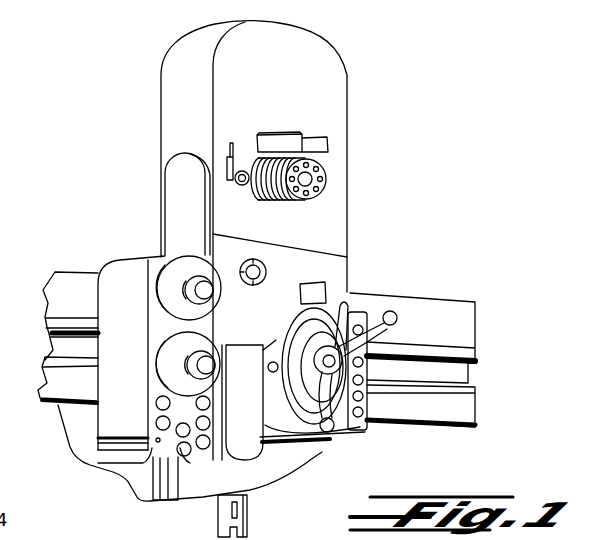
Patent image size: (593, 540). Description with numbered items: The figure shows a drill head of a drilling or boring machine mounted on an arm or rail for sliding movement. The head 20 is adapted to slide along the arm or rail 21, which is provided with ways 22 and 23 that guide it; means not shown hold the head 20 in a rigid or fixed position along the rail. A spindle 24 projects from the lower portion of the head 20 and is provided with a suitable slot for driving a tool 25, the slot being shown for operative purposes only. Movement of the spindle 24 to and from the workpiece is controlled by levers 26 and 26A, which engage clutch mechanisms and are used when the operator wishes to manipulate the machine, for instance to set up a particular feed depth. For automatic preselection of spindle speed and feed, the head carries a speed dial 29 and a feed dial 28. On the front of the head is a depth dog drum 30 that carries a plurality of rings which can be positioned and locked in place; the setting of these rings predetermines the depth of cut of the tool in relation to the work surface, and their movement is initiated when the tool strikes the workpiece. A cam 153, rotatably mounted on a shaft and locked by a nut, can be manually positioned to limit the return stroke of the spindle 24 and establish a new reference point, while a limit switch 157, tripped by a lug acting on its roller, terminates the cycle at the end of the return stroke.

The head 20 is at (327, 78).
The arm or rail 21 is at (454, 332).
The way 22 is at (460, 329).
The way 23 is at (465, 410).
The spindle 24 is at (250, 520).
The tool 25 is at (222, 510).
The lever 26 is at (345, 378).
The lever 26A is at (337, 443).
The feed dial 28 is at (165, 273).
The speed dial 29 is at (175, 373).
The depth dog drum 30 is at (326, 171).
The cam 153 is at (239, 185).
The limit switch 157 is at (233, 143).